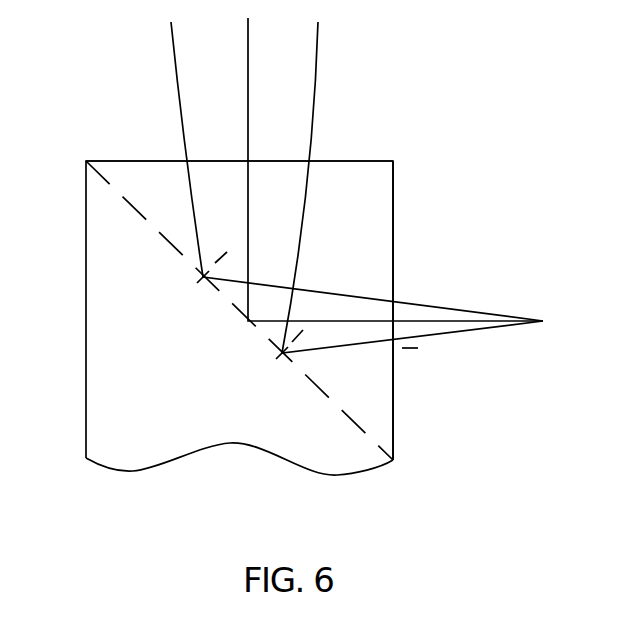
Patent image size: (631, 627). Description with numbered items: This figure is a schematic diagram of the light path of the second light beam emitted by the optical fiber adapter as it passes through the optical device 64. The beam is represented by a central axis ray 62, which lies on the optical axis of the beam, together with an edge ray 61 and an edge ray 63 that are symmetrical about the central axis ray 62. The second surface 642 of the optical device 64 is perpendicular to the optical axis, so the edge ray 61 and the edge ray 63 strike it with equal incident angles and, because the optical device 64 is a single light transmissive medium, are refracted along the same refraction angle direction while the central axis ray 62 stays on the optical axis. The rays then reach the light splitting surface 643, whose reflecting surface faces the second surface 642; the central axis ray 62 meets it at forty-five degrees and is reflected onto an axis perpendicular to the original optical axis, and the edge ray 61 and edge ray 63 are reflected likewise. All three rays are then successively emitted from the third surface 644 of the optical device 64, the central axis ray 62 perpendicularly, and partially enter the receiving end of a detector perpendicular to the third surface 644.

The optical device 64 is at (96, 263).
The second surface 642 is at (411, 423).
The light splitting surface 643 is at (144, 200).
The third surface 644 is at (356, 146).
The edge ray 61 is at (418, 284).
The central axis ray 62 is at (452, 308).
The edge ray 63 is at (498, 313).